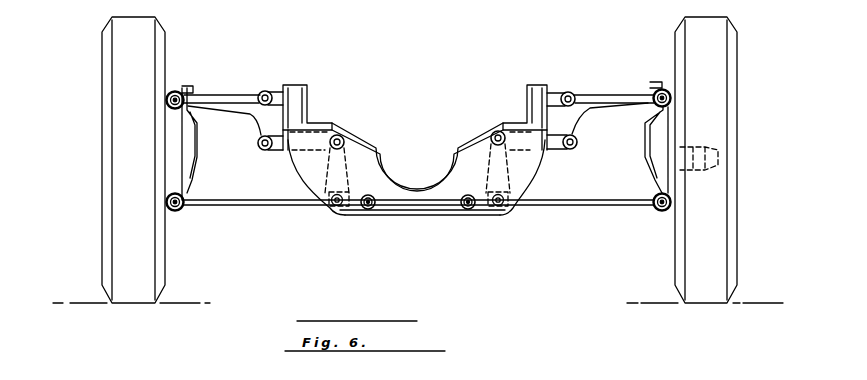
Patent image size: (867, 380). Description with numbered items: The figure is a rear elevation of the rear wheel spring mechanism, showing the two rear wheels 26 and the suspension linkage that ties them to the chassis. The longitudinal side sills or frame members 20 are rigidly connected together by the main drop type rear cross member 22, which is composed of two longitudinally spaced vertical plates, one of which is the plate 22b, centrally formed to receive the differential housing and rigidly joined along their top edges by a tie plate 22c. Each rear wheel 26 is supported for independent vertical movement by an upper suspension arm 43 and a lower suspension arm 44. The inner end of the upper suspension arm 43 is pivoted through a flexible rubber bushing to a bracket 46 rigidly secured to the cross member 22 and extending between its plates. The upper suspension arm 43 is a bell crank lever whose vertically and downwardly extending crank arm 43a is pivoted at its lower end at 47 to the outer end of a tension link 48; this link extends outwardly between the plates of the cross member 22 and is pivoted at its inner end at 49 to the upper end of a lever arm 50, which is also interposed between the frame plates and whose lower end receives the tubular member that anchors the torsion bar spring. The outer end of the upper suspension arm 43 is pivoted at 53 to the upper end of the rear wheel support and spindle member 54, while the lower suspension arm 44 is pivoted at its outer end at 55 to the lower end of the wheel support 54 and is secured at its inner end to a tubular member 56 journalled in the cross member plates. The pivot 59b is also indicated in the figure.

The longitudinal side sills or frame members 20 is at (310, 106).
The main drop type rear cross member 22 is at (394, 216).
The vertical plate 22b is at (453, 208).
The tie plate 22c is at (383, 143).
The rear wheel 26 is at (120, 38).
The upper suspension arm 43 is at (210, 97).
The crank arm 43a is at (257, 135).
The lower suspension arm 44 is at (245, 203).
The bracket 46 is at (278, 93).
The pivot 47 is at (262, 149).
The tension link 48 is at (283, 146).
The pivot 49 is at (339, 135).
The lever arm 50 is at (350, 167).
The pivot 53 is at (166, 100).
The rear wheel support and spindle member 54 is at (173, 167).
The pivot 55 is at (180, 209).
The tubular member 56 is at (378, 202).
The strut lower pivot 59b is at (332, 208).